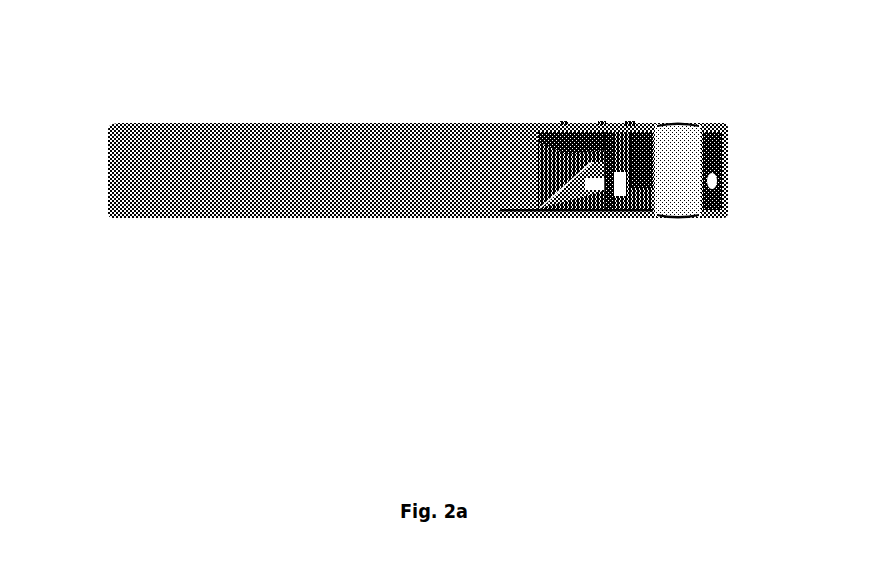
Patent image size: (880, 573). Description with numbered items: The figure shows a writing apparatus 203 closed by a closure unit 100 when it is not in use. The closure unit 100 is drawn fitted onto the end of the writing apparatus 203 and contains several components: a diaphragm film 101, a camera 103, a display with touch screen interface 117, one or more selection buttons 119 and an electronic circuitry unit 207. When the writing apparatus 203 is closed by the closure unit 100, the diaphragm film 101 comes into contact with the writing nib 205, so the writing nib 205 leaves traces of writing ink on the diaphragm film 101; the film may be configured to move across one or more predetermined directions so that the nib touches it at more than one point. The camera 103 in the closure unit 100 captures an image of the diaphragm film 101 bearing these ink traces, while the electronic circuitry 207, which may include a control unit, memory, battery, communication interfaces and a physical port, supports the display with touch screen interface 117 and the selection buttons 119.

The writing apparatus 203 is at (197, 173).
The selection buttons 119 is at (603, 122).
The camera 103 is at (630, 122).
The display with touch screen interface 117 is at (685, 120).
The electronic circuitry unit 207 is at (724, 195).
The writing nib 205 is at (547, 217).
The diaphragm film 101 is at (590, 218).
The closure unit 100 is at (628, 218).